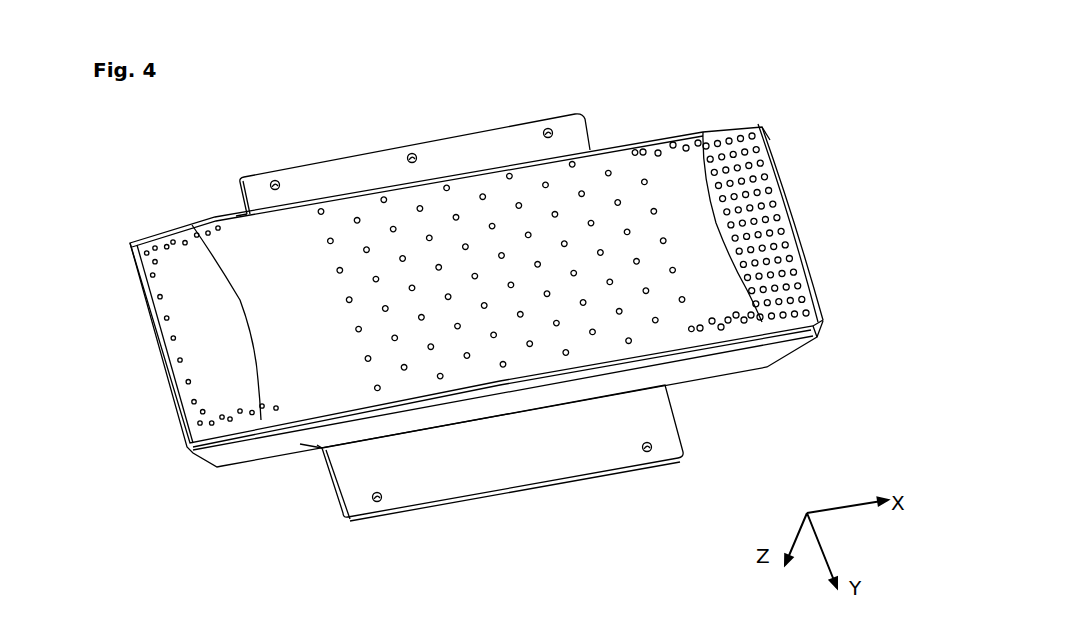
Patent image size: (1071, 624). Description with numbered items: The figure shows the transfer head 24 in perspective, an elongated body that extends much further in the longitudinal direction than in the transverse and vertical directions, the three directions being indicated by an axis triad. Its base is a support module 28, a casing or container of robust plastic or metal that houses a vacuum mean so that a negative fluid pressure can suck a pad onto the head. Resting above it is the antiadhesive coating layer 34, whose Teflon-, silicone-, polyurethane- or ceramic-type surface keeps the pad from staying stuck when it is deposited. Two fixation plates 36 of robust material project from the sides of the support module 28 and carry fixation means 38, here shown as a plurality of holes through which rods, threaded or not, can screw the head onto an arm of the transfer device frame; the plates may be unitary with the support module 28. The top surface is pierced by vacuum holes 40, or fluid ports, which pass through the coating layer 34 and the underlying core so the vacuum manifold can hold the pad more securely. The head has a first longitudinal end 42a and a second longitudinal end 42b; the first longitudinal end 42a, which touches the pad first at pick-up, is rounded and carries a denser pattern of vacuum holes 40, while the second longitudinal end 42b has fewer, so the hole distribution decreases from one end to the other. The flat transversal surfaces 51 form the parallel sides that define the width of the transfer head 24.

The transfer head 24 is at (767, 100).
The support module 28 is at (713, 367).
The coating layer 34 is at (254, 287).
The fixation plate 36 is at (349, 180).
The fixation means 38 is at (540, 135).
The vacuum holes 40 is at (786, 271).
The first longitudinal end 42a is at (787, 204).
The second longitudinal end 42b is at (167, 383).
The transversal surfaces 51 is at (237, 215).